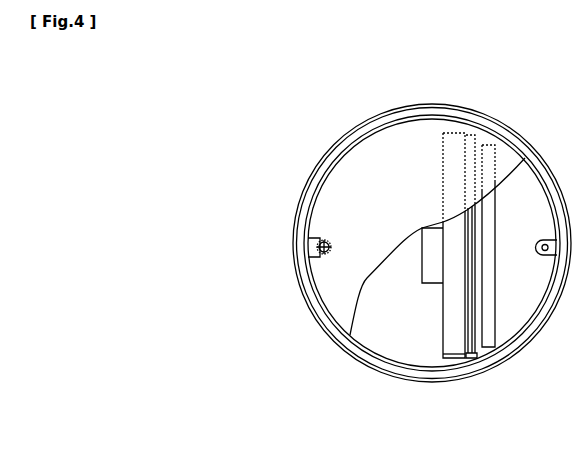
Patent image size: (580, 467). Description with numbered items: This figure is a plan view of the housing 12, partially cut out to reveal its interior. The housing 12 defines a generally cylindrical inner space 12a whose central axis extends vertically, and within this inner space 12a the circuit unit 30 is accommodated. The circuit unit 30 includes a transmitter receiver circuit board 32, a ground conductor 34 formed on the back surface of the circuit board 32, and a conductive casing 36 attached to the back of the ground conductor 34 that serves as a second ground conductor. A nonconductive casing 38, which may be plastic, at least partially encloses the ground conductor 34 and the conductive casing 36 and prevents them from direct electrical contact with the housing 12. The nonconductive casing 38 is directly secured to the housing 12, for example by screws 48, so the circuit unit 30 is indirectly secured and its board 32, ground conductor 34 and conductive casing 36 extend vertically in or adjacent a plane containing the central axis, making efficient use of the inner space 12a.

The housing 12 is at (306, 182).
The generally cylindrical inner space 12a is at (367, 347).
The circuit unit 30 is at (476, 352).
The transmitter receiver circuit board 32 is at (468, 322).
The ground conductor 34 is at (452, 338).
The conductive casing 36 is at (433, 268).
The nonconductive casing 38 is at (428, 145).
The screws 48 is at (312, 240).